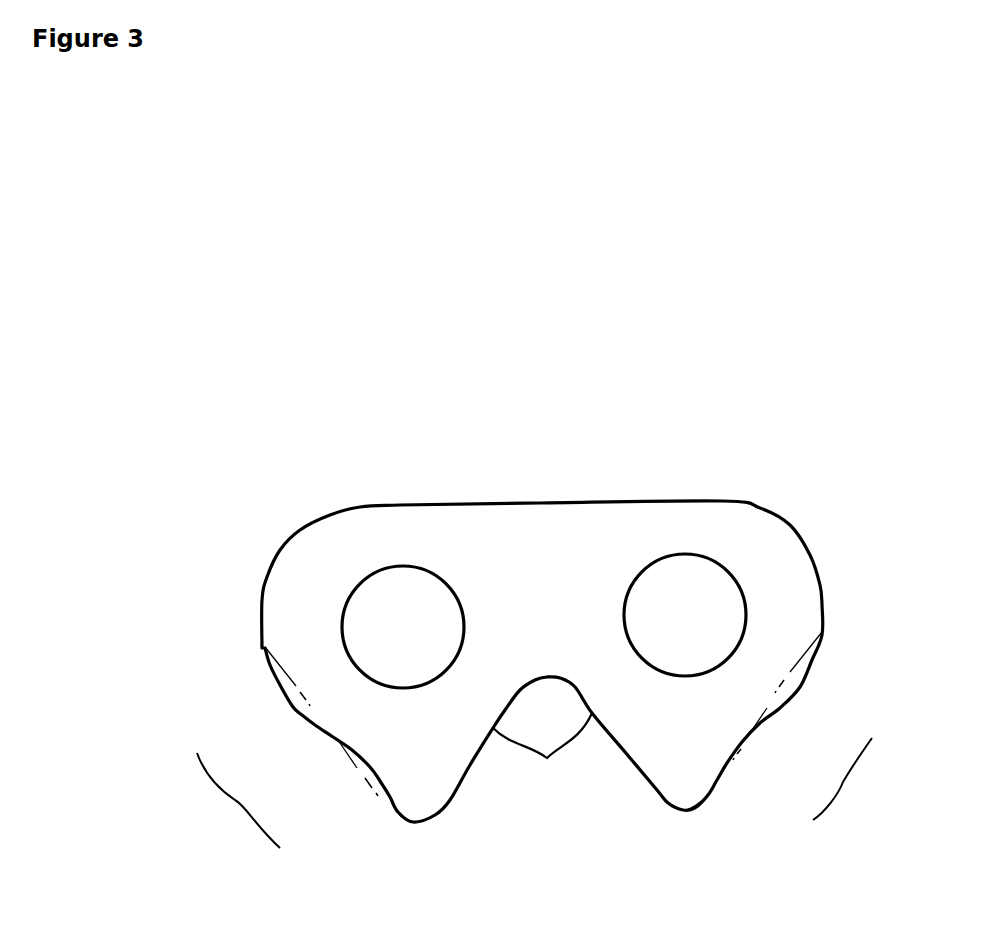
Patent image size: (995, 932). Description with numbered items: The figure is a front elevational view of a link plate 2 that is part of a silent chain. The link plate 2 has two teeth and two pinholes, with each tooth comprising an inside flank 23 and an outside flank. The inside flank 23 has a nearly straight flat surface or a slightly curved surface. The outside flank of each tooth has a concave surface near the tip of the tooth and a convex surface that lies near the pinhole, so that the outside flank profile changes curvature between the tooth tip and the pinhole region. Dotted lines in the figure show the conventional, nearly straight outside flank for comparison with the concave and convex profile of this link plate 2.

The link plate 2 is at (553, 495).
The inside flank 23 is at (542, 752).